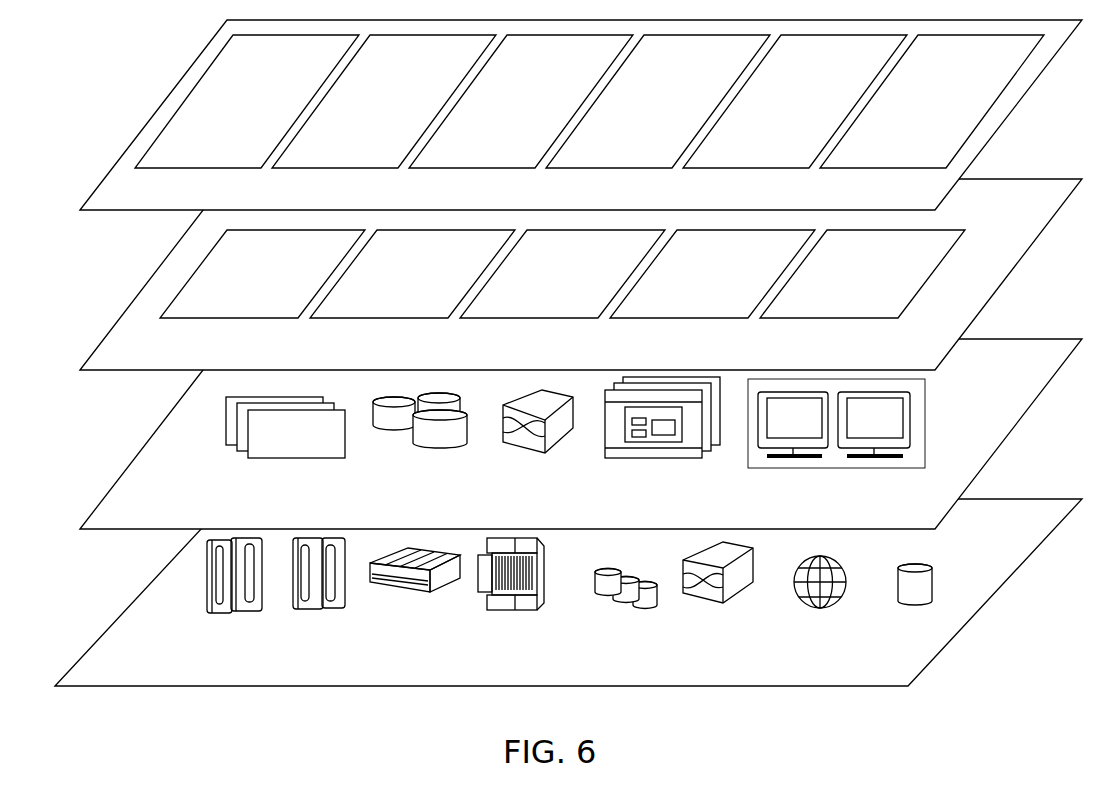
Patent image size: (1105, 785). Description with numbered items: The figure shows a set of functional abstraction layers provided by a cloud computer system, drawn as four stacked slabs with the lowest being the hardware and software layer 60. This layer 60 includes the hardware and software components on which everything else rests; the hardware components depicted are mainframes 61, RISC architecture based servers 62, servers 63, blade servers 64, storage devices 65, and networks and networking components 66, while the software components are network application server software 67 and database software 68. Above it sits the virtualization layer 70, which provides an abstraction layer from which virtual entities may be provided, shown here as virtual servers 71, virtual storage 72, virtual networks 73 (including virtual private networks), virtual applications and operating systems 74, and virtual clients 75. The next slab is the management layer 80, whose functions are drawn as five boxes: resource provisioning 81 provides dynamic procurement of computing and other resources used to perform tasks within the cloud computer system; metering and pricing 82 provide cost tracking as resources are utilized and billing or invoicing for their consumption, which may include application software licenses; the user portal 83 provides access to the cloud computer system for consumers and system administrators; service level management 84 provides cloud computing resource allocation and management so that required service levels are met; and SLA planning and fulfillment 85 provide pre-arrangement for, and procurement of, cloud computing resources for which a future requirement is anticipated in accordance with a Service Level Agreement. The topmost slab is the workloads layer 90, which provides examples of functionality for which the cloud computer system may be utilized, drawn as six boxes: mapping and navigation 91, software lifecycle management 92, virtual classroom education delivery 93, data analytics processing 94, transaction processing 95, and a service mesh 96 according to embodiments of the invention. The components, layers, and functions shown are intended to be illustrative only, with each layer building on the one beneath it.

The hardware and software layer 60 is at (130, 687).
The mainframes 61 is at (236, 613).
The RISC architecture based servers 62 is at (333, 609).
The servers 63 is at (420, 593).
The blade servers 64 is at (522, 610).
The storage devices 65 is at (622, 603).
The networks and networking components 66 is at (723, 604).
The network application server software 67 is at (822, 608).
The database software 68 is at (918, 605).
The virtualization layer 70 is at (131, 530).
The virtual servers 71 is at (300, 458).
The virtual storage 72 is at (448, 448).
The virtual networks 73 is at (550, 453).
The virtual applications and operating systems 74 is at (662, 458).
The virtual clients 75 is at (843, 468).
The management layer 80 is at (131, 371).
The resource provisioning 81 is at (251, 288).
The metering and pricing 82 is at (398, 288).
The user portal 83 is at (548, 288).
The service level management 84 is at (698, 288).
The SLA planning and fulfillment 85 is at (848, 288).
The workloads layer 90 is at (131, 211).
The mapping and navigation 91 is at (235, 108).
The software lifecycle management 92 is at (372, 108).
The virtual classroom education delivery 93 is at (509, 108).
The data analytics processing 94 is at (646, 108).
The transaction processing 95 is at (781, 108).
The service mesh 96 is at (954, 109).